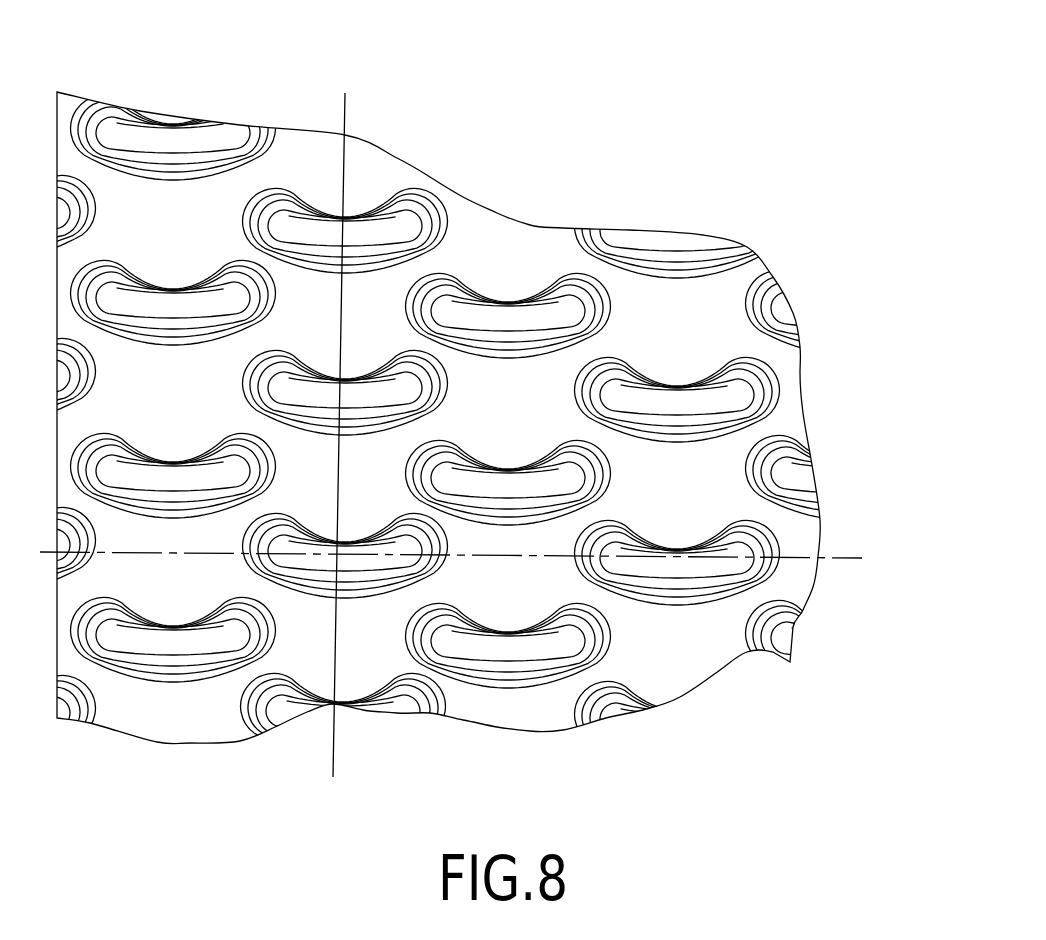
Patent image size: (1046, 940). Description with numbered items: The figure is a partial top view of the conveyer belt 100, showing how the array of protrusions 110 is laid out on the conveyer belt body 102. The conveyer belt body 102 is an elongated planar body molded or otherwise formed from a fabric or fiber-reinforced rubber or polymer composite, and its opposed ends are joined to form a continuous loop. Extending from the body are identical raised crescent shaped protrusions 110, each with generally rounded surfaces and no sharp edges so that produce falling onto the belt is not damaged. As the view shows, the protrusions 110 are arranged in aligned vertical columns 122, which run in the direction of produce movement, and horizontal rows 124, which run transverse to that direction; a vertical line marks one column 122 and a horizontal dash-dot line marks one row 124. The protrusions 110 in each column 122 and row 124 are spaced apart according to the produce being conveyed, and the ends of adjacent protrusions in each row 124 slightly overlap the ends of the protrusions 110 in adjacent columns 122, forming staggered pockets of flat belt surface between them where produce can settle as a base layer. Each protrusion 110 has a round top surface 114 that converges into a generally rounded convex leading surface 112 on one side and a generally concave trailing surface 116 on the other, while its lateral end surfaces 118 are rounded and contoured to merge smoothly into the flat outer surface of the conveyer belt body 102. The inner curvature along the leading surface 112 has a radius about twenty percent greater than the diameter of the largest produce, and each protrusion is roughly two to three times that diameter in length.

The conveyer belt 100 is at (650, 125).
The conveyer belt body 102 is at (690, 648).
The protrusion 110 is at (700, 355).
The leading surface 112 is at (668, 380).
The top surface 114 is at (723, 397).
The trailing surface 116 is at (687, 433).
The lateral end surfaces 118 is at (587, 390).
The columns 122 is at (347, 115).
The rows 124 is at (833, 562).